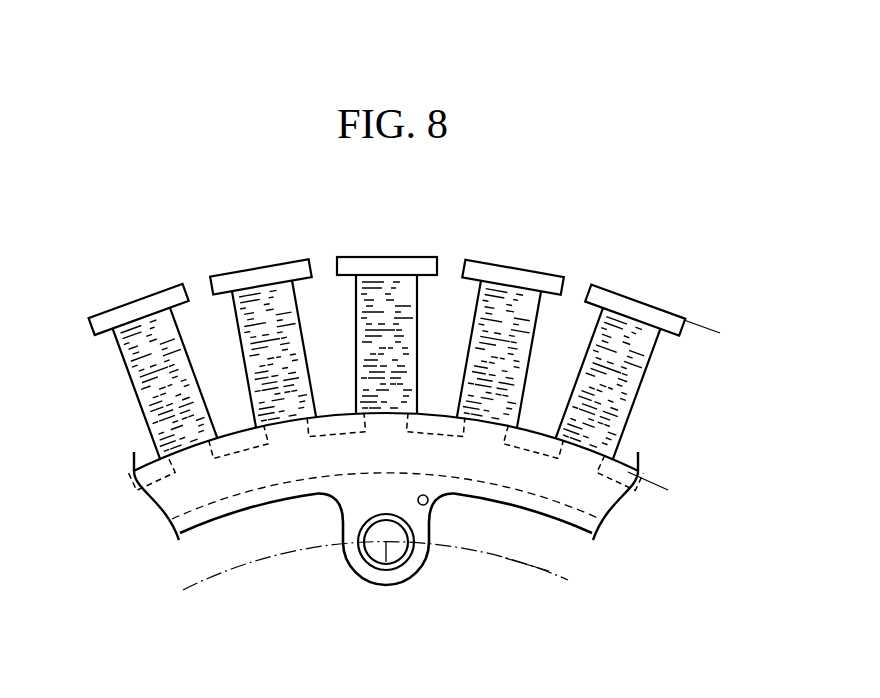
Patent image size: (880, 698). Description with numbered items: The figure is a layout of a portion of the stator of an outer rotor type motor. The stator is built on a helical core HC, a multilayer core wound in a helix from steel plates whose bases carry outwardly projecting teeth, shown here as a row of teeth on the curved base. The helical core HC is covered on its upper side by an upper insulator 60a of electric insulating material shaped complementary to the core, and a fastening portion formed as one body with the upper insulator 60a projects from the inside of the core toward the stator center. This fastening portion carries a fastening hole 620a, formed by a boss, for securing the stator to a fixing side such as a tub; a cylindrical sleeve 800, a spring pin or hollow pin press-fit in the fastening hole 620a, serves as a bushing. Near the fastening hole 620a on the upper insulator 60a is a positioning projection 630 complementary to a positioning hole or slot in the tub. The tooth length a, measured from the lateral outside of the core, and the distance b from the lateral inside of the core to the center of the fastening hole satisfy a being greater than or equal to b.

The upper insulator 60a is at (218, 514).
The helical core HC is at (172, 506).
The cylindrical sleeve 800 is at (365, 563).
The fastening hole 620a is at (386, 562).
The positioning projection 630 is at (425, 505).
The tooth length a is at (714, 334).
The distance to fastening hole center b is at (542, 468).